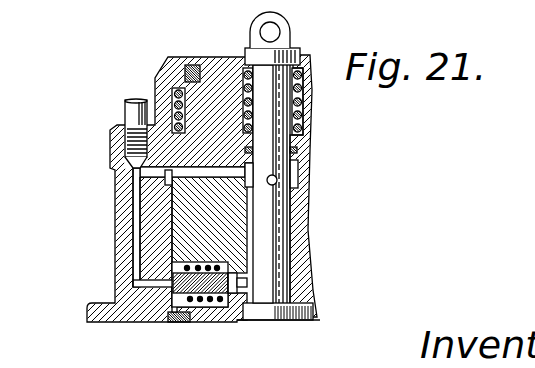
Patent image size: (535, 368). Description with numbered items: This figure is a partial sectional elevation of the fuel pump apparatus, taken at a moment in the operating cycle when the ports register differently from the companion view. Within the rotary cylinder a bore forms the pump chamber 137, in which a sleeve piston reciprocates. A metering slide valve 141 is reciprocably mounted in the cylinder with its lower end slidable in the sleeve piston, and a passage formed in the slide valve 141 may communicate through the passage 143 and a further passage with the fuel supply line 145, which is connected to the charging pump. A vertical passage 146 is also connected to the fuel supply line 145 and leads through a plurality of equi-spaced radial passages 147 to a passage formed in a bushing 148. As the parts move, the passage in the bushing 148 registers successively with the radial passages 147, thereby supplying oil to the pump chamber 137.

The pump chamber 137 is at (298, 223).
The metering slide valve 141 is at (148, 173).
The passage 143 is at (190, 180).
The fuel supply line 145 is at (125, 104).
The vertical passage 146 is at (135, 241).
The radial passages 147 is at (145, 287).
The bushing 148 is at (215, 302).